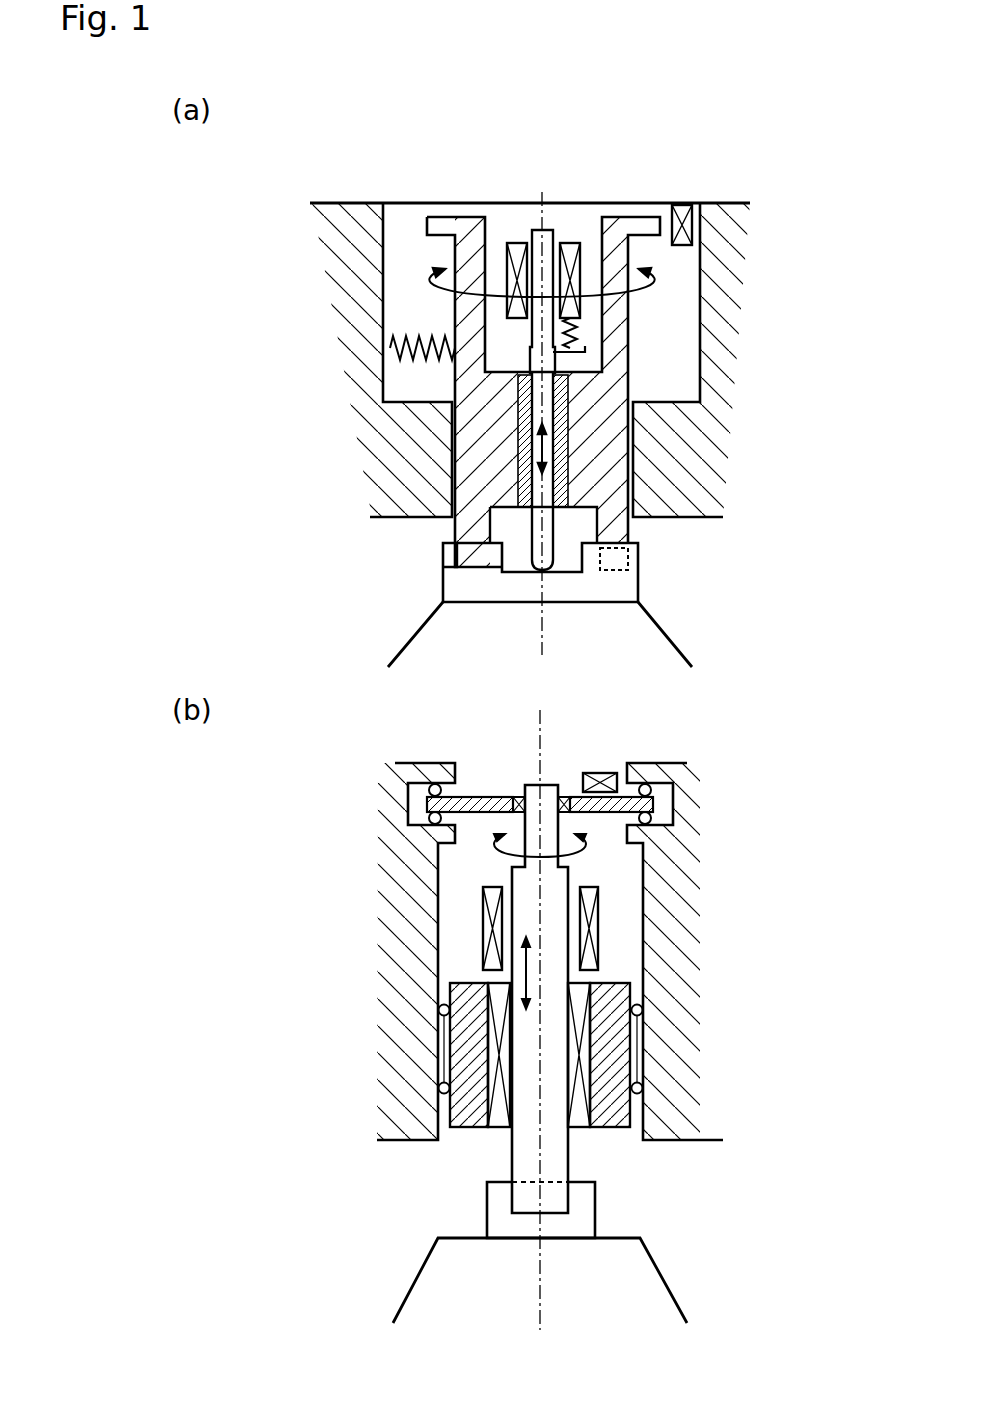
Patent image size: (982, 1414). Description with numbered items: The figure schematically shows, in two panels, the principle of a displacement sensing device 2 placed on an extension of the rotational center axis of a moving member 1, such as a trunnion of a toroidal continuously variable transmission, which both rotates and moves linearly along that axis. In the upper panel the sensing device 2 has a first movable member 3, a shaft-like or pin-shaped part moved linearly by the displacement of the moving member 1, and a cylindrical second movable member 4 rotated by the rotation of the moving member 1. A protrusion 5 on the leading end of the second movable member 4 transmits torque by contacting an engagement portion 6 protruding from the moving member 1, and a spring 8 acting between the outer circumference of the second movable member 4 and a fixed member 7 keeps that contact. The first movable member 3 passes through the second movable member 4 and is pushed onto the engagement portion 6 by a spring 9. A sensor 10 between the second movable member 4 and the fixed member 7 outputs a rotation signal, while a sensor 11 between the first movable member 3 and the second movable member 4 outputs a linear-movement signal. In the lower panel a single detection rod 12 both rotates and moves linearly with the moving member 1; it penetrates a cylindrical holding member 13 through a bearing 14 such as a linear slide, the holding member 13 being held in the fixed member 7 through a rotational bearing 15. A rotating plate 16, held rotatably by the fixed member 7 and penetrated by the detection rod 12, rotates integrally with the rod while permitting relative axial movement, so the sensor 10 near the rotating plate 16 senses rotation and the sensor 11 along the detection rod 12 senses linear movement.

The moving member 1 is at (678, 645).
The sensing device 2 is at (652, 175).
The first movable member 3 is at (537, 563).
The second movable member 4 is at (473, 467).
The protrusion 5 is at (460, 567).
The engagement portion 6 is at (638, 585).
The fixed member 7 is at (335, 278).
The spring 8 is at (407, 337).
The spring 9 is at (565, 325).
The sensor 10 is at (683, 207).
The sensor 11 is at (573, 243).
The detection rod 12 is at (557, 1163).
The holding member 13 is at (620, 983).
The bearing 14 is at (583, 1123).
The rotational bearing 15 is at (440, 1010).
The rotating plate 16 is at (480, 797).